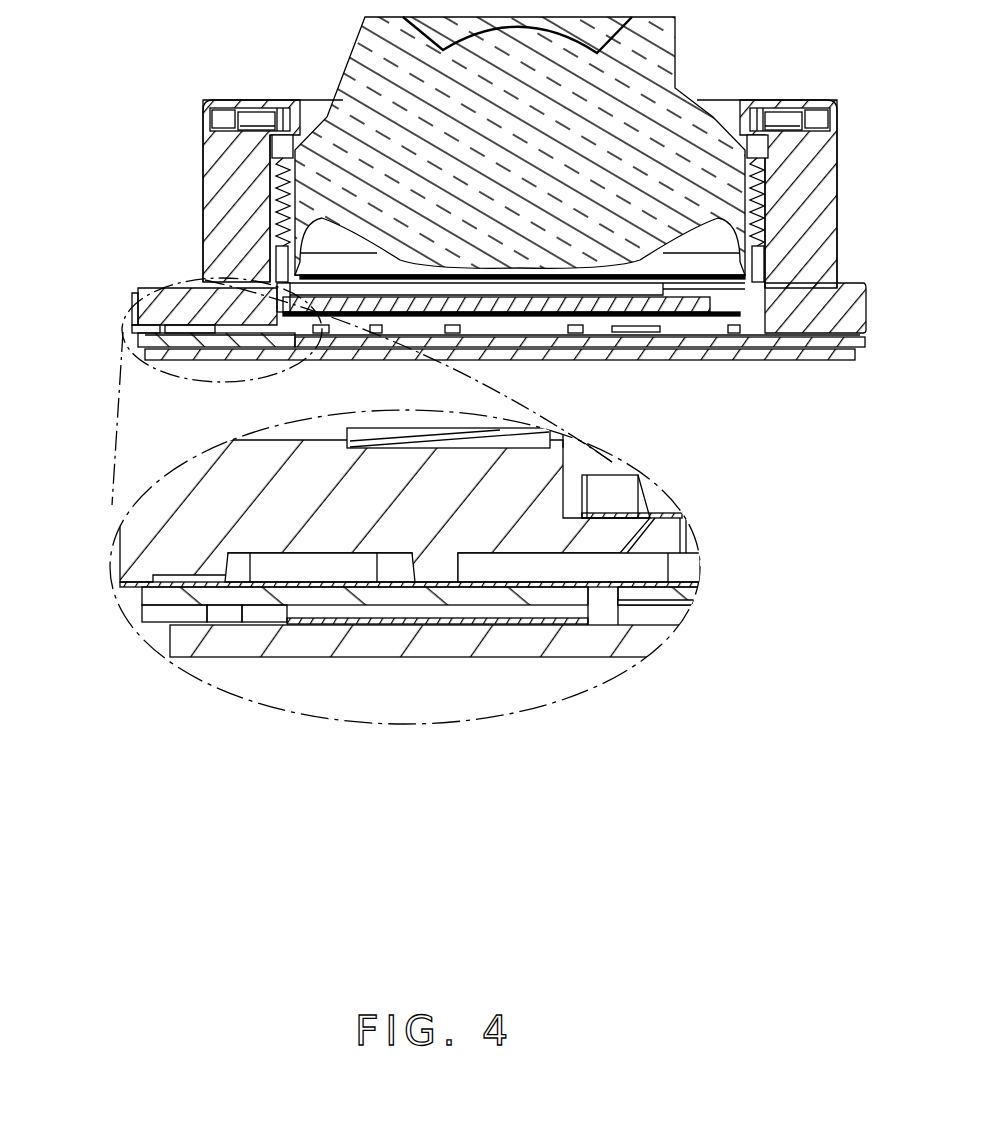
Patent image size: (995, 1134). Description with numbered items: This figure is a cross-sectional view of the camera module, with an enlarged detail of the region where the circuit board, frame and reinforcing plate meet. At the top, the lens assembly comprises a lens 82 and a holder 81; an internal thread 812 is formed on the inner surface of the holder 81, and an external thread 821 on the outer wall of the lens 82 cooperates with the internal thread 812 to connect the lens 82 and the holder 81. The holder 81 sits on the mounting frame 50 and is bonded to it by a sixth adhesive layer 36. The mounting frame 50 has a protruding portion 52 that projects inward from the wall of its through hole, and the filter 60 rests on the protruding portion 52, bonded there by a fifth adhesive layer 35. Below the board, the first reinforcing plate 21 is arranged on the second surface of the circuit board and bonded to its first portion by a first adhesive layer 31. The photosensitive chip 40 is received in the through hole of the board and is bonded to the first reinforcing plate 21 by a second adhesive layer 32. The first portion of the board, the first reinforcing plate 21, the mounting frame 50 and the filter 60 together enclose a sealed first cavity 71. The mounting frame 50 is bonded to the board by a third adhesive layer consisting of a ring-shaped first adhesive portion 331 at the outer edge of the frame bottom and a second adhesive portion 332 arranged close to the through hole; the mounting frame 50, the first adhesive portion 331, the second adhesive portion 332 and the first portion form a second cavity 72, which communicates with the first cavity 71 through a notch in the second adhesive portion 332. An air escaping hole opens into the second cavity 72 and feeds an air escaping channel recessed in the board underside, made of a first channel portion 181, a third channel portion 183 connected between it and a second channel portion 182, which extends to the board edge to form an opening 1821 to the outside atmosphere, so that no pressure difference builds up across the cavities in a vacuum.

The lens 82 is at (388, 83).
The internal thread 812 is at (290, 200).
The external thread 821 is at (275, 193).
The holder 81 is at (230, 230).
The filter 60 is at (720, 303).
The mounting frame 50 is at (845, 295).
The sixth adhesive layer 36 is at (480, 437).
The second adhesive layer 32 is at (630, 350).
The first cavity 71 is at (680, 318).
The photosensitive chip 40 is at (733, 343).
The first reinforcing plate 21 is at (815, 350).
The fifth adhesive layer 35 is at (640, 518).
The protruding portion 52 is at (615, 530).
The first adhesive portion 331 is at (185, 582).
The opening 1821 is at (148, 612).
The second channel portion 182 is at (157, 613).
The first channel portion 181 is at (220, 617).
The third channel portion 183 is at (262, 615).
The second cavity 72 is at (323, 570).
The first adhesive layer 31 is at (375, 605).
The second adhesive portion 332 is at (440, 610).